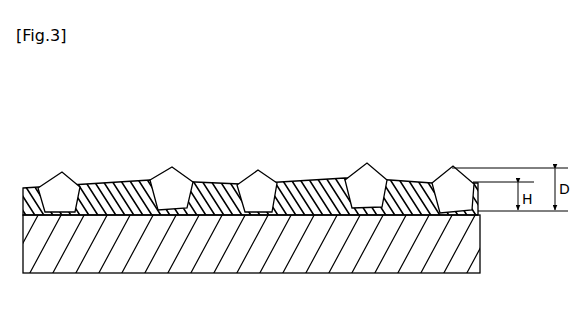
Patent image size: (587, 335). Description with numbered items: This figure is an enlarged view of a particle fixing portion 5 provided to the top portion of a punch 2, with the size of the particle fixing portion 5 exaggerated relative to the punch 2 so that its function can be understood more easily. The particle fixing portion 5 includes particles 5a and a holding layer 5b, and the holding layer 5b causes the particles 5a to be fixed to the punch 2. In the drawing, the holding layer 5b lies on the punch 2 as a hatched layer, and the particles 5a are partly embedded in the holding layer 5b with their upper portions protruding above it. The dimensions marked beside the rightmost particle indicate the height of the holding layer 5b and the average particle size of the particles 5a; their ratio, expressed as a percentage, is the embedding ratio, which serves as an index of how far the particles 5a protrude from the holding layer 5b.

The punch 2 is at (257, 255).
The particle fixing portion 5 is at (253, 142).
The particles 5a is at (58, 183).
The holding layer 5b is at (305, 197).